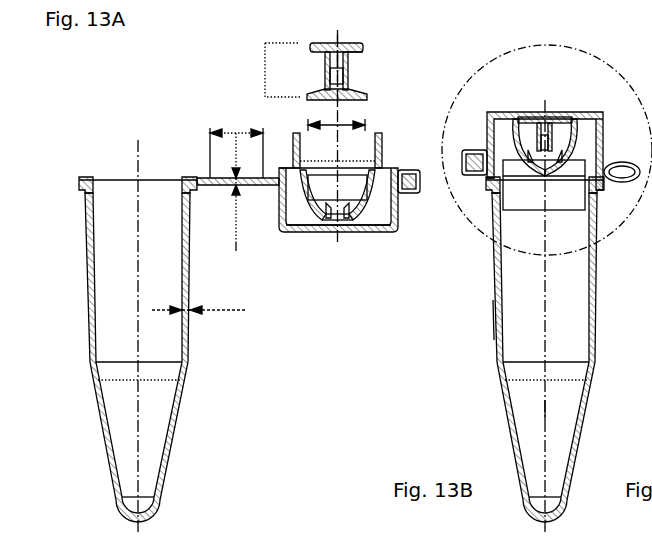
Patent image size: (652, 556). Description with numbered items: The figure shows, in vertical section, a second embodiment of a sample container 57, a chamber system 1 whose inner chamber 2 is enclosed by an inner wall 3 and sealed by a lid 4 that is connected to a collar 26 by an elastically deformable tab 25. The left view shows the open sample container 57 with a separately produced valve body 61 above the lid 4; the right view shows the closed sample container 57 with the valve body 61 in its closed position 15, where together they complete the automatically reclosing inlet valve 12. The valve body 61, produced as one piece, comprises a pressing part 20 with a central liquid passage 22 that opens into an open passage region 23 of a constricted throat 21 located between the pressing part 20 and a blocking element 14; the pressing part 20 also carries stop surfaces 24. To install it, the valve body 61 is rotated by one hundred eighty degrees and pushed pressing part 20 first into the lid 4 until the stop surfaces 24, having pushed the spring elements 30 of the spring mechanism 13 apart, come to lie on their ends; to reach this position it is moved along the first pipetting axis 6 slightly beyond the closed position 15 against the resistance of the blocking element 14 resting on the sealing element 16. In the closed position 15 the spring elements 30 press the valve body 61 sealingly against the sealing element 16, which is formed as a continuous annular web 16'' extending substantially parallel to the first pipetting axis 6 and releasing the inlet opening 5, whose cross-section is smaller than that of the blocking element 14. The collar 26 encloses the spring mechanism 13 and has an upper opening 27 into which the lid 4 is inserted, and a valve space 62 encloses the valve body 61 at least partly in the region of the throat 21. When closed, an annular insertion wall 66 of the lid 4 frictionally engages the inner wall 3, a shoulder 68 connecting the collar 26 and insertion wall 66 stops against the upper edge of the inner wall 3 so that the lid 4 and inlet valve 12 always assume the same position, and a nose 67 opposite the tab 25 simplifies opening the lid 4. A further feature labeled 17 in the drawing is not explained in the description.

In FIG. 13A, the inner chamber 2 is at (121, 299).
In FIG. 13B, the inner chamber 2 is at (545, 317).
In FIG. 13A, the inner wall 3 is at (206, 310).
In FIG. 13B, the inner wall 3 is at (492, 318).
In FIG. 13A, the lid 4 is at (322, 280).
In FIG. 13A, the inlet opening 5 is at (336, 119).
In FIG. 13A, the first pipetting axis 6 is at (140, 420).
In FIG. 13B, the first pipetting axis 6 is at (543, 413).
In FIG. 13A, the inlet valve 12 is at (348, 137).
In FIG. 13B, the inlet valve 12 is at (460, 98).
In FIG. 13A, the spring mechanism 13 is at (355, 234).
In FIG. 13B, the spring mechanism 13 is at (568, 112).
In FIG. 13A, the blocking element 14 is at (320, 98).
In FIG. 13B, the blocking element 14 is at (515, 177).
In FIG. 13A, the closed position 15 is at (479, 64).
In FIG. 13A, the sealing element 16 is at (377, 221).
In FIG. 13B, the annular web 16'' is at (470, 198).
In FIG. 13B, the tube rim 17 is at (644, 18).
In FIG. 13A, the pressing part 20 is at (318, 46).
In FIG. 13B, the pressing part 20 is at (527, 112).
In FIG. 13A, the constricted throat 21 is at (330, 61).
In FIG. 13A, the central liquid passage 22 is at (339, 48).
In FIG. 13B, the central liquid passage 22 is at (543, 112).
In FIG. 13A, the open passage region 23 is at (343, 75).
In FIG. 13A, the stop surfaces 24 is at (360, 56).
In FIG. 13A, the elastically deformable tab 25 is at (236, 190).
In FIG. 13B, the elastically deformable tab 25 is at (625, 183).
In FIG. 13A, the collar 26 is at (287, 232).
In FIG. 13B, the collar 26 is at (603, 133).
In FIG. 13A, the upper opening 27 is at (295, 230).
In FIG. 13A, the spring elements 30 is at (333, 210).
In FIG. 13B, the spring elements 30 is at (523, 137).
In FIG. 13A, the sample container 57 is at (84, 96).
In FIG. 13B, the sample container 57 is at (424, 341).
In FIG. 13A, the valve body 61 is at (265, 70).
In FIG. 13B, the valve space 62 is at (527, 153).
In FIG. 13A, the annular insertion wall 66 is at (236, 140).
In FIG. 13B, the annular insertion wall 66 is at (585, 197).
In FIG. 13A, the nose 67 is at (404, 194).
In FIG. 13A, the shoulder 68 is at (270, 186).
In FIG. 13B, the chamber system 1 is at (648, 154).